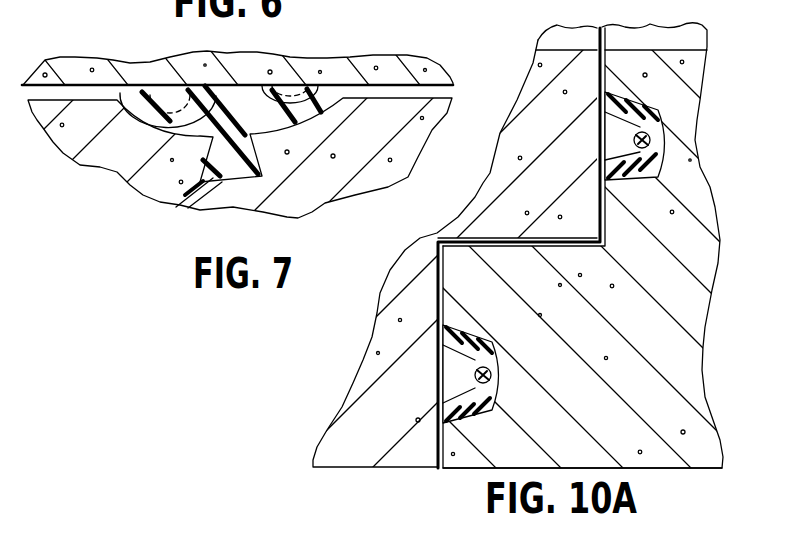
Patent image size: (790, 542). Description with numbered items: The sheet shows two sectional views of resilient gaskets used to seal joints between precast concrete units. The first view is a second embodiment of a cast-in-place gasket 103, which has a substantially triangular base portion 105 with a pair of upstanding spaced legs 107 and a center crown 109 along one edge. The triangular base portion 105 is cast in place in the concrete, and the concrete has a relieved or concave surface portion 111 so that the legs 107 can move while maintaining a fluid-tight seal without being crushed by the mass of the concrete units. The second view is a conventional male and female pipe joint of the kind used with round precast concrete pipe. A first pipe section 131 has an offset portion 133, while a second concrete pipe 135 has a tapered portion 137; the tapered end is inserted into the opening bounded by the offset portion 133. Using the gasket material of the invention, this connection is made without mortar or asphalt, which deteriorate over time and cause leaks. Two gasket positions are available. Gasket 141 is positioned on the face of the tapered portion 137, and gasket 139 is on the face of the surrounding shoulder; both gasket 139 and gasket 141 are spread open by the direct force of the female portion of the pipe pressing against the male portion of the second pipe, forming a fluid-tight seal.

In FIG. 7, the resilient cast-in-place gasket 103 is at (186, 200).
In FIG. 7, the triangular base portion 105 is at (262, 178).
In FIG. 7, the upstanding spaced legs 107 is at (165, 84).
In FIG. 7, the center crown 109 is at (238, 83).
In FIG. 7, the relieved or concave surface portion 111 is at (145, 132).
In FIG. 10A, the first pipe section 131 is at (480, 188).
In FIG. 10A, the offset portion 133 is at (528, 87).
In FIG. 10A, the second concrete pipe 135 is at (718, 193).
In FIG. 10A, the tapered portion 137 is at (700, 289).
In FIG. 10A, the gasket 139 is at (600, 176).
In FIG. 10A, the gasket 141 is at (441, 352).